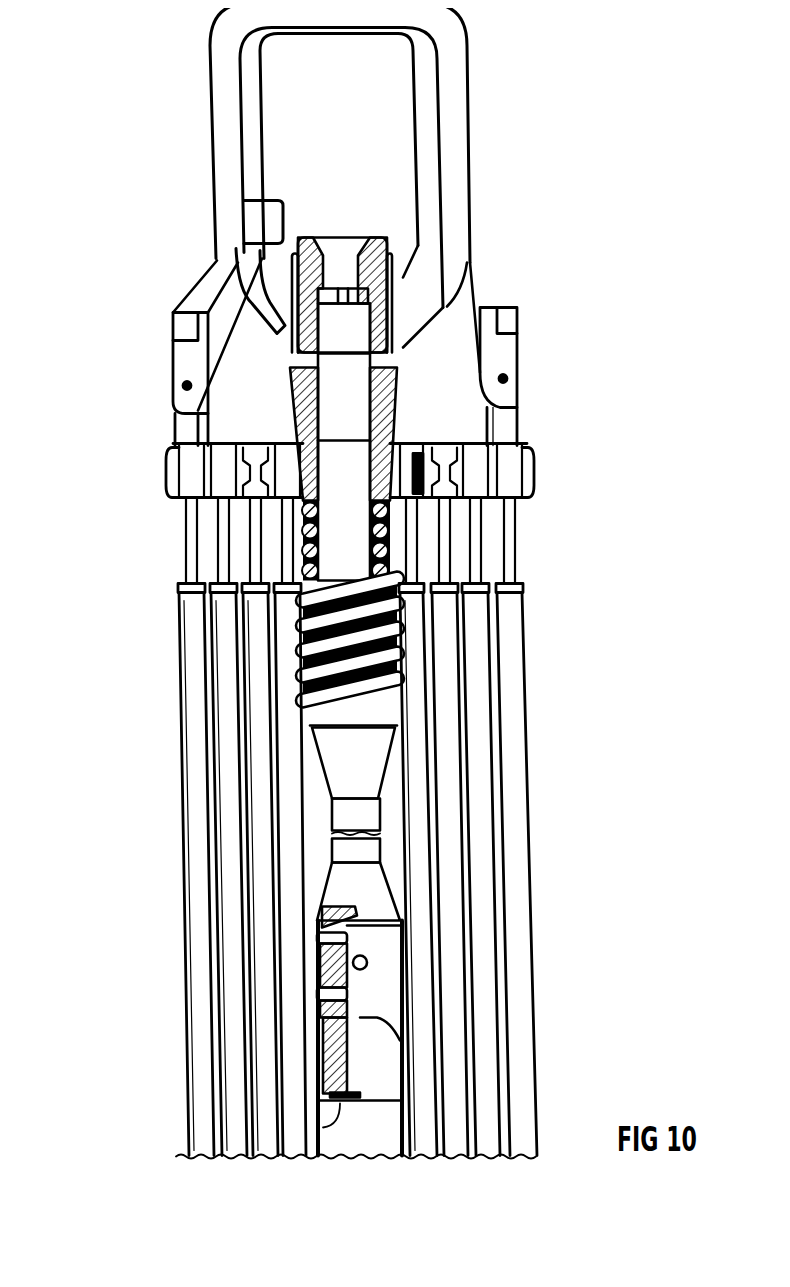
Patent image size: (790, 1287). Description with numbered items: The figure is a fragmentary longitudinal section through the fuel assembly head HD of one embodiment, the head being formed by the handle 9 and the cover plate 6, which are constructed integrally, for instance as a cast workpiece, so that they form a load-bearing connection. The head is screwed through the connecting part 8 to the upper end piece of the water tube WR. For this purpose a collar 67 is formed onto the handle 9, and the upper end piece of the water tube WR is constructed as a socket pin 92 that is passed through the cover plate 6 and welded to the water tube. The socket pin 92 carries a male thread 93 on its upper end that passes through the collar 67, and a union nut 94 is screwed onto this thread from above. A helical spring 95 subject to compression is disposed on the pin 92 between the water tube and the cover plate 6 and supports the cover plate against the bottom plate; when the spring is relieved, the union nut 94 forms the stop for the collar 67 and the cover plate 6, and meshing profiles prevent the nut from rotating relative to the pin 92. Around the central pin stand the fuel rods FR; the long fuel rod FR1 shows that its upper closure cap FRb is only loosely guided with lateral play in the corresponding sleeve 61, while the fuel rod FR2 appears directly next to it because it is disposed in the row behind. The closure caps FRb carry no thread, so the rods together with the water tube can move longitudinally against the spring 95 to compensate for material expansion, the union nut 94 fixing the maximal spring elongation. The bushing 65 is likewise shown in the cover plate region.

The head HD is at (90, 270).
The handle 9 is at (227, 163).
The cover plate 6 is at (168, 470).
The connecting part 8 is at (555, 190).
The union nut 94 is at (393, 253).
The male thread 93 is at (405, 260).
The collar 67 is at (382, 400).
The sleeve 61 is at (395, 443).
The bushing 65 is at (523, 470).
The socket pin 92 is at (350, 540).
The helical spring 95 is at (377, 610).
The upper closure cap FRb is at (507, 517).
The fuel rod FR is at (510, 686).
The fuel rod FR1 is at (420, 813).
The fuel rod FR2 is at (450, 883).
The water tube WR is at (370, 1127).